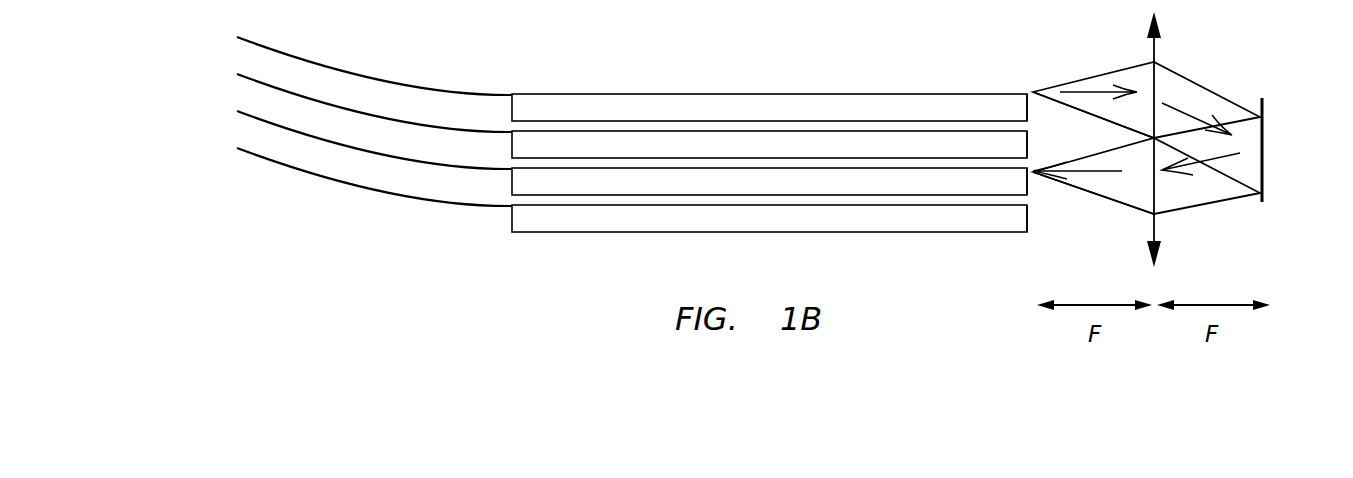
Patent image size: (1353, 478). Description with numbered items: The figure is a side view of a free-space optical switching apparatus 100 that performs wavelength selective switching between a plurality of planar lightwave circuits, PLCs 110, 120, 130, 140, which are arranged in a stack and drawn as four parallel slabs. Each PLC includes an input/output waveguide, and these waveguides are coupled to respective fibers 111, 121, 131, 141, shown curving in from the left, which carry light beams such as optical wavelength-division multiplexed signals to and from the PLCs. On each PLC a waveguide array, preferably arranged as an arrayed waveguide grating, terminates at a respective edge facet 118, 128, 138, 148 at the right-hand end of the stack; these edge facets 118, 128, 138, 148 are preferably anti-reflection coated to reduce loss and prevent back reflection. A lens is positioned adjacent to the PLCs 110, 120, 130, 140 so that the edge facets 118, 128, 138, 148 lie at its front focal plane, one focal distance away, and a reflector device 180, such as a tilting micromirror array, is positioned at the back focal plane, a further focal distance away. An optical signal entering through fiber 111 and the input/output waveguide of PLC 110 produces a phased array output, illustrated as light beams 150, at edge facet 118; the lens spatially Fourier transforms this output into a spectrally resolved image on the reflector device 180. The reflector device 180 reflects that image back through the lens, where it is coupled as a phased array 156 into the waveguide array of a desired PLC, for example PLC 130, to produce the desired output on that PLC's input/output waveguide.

The free-space optical switching apparatus 100 is at (558, 66).
The PLC 110 is at (512, 112).
The PLC 120 is at (512, 149).
The PLC 130 is at (512, 186).
The PLC 140 is at (512, 223).
The fiber 111 is at (243, 41).
The fiber 121 is at (243, 78).
The fiber 131 is at (243, 115).
The fiber 141 is at (243, 152).
The edge facet 118 is at (1028, 105).
The edge facet 128 is at (1028, 142).
The edge facet 138 is at (1028, 183).
The edge facet 148 is at (1028, 220).
The light beams 150 is at (1095, 80).
The phased array 156 is at (1135, 200).
The reflector device 180 is at (1266, 84).